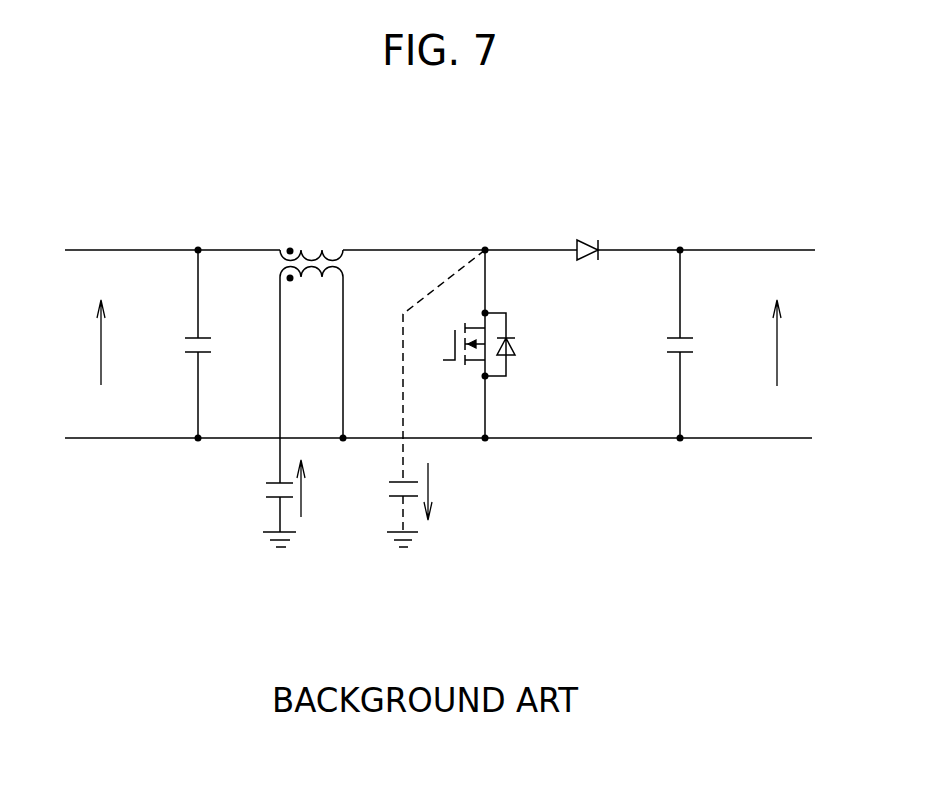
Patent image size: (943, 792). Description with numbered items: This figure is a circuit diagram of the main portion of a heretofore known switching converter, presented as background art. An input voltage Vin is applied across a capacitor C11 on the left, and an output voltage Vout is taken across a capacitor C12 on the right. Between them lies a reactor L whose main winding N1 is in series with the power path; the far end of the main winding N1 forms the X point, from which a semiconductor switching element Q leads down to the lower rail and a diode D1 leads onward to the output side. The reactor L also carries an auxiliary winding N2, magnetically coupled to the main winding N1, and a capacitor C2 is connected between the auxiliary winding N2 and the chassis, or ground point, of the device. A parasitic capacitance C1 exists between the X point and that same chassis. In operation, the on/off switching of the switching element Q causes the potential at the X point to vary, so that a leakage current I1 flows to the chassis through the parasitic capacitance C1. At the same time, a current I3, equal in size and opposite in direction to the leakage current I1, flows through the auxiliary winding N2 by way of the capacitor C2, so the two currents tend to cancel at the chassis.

The reactor L is at (286, 308).
The main winding N1 is at (308, 241).
The auxiliary winding N2 is at (312, 290).
The capacitor C11 is at (175, 344).
The capacitor C12 is at (695, 344).
The parasitic capacitance C1 is at (417, 398).
The capacitor C2 is at (262, 492).
The leakage current I1 is at (440, 500).
The current I3 is at (313, 499).
The X point X is at (485, 235).
The semiconductor switching element Q is at (468, 346).
The diode D1 is at (585, 236).
The input voltage Vin is at (78, 342).
The output voltage Vout is at (798, 343).